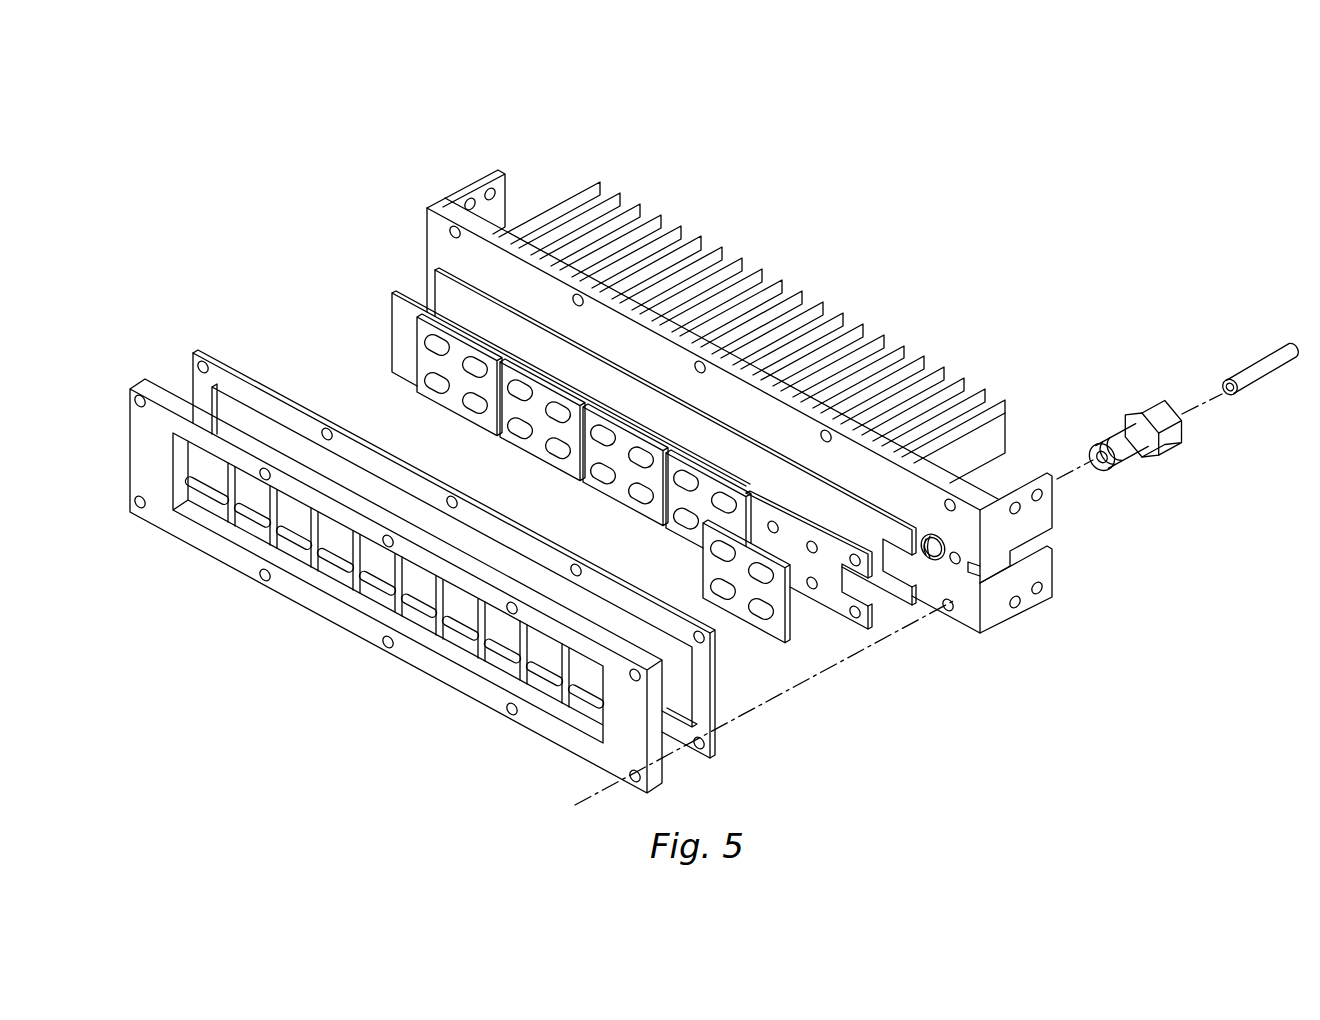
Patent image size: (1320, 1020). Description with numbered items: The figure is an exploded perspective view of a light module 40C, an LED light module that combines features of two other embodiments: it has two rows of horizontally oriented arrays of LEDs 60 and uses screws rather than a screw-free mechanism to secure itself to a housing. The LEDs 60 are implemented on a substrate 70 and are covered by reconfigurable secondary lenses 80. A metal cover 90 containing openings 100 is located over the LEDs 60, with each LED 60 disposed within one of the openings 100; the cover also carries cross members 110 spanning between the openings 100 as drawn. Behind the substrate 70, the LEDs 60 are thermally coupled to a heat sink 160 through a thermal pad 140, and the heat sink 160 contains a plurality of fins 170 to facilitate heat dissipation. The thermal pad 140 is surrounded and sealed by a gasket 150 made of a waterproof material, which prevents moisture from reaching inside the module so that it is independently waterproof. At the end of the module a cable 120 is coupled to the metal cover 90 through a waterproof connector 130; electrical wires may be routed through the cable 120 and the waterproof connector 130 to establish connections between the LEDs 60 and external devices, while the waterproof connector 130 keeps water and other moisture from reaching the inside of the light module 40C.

The light module 40C is at (825, 154).
The LED 60 is at (813, 582).
The substrate 70 is at (394, 336).
The reconfigurable secondary lens 80 is at (556, 452).
The metal cover 90 is at (558, 735).
The opening 100 is at (333, 584).
The cross rod 110 is at (435, 664).
The cable 120 is at (1253, 362).
The waterproof connector 130 is at (1139, 411).
The thermal pad 140 is at (438, 293).
The gasket 150 is at (377, 463).
The heat sink 160 is at (473, 190).
The fin 170 is at (932, 363).